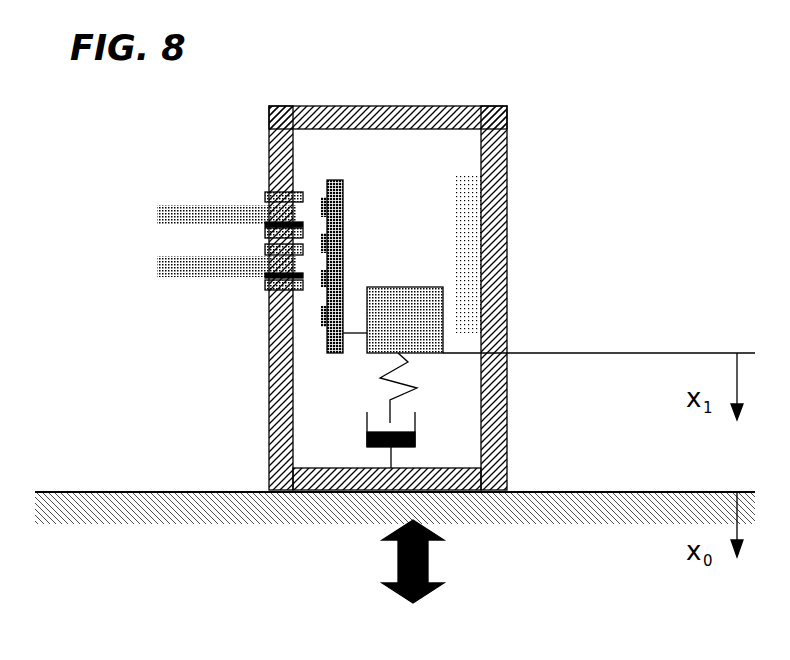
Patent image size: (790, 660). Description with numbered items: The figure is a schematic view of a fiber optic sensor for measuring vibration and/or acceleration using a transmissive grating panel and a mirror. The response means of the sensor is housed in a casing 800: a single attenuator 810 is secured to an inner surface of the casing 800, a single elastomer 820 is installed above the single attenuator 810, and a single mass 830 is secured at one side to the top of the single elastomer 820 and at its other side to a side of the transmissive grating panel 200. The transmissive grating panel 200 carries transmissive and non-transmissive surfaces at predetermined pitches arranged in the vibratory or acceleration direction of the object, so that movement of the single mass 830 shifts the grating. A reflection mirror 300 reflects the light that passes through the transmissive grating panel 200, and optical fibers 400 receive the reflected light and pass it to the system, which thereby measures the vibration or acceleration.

The transmissive grating panel 200 is at (343, 210).
The reflection mirror 300 is at (466, 222).
The optical fibers 400 is at (155, 215).
The casing 800 is at (335, 490).
The single attenuator 810 is at (417, 443).
The single elastomer 820 is at (412, 372).
The single mass 830 is at (440, 312).